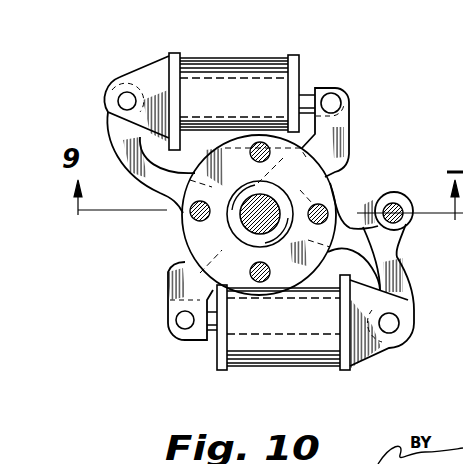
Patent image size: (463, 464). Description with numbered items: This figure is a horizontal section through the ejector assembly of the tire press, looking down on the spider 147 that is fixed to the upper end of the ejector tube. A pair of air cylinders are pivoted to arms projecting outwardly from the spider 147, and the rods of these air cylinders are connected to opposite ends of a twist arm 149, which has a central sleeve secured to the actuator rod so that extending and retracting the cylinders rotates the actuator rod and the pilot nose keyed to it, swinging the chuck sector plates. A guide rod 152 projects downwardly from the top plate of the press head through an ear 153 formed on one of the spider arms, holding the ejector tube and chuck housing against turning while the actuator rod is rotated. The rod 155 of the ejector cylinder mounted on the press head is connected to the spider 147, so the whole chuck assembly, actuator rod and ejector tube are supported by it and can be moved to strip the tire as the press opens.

The spider 147 is at (330, 185).
The twist arm 149 is at (342, 128).
The guide rod 152 is at (402, 224).
The ear 153 is at (391, 193).
The rod 155 is at (245, 218).